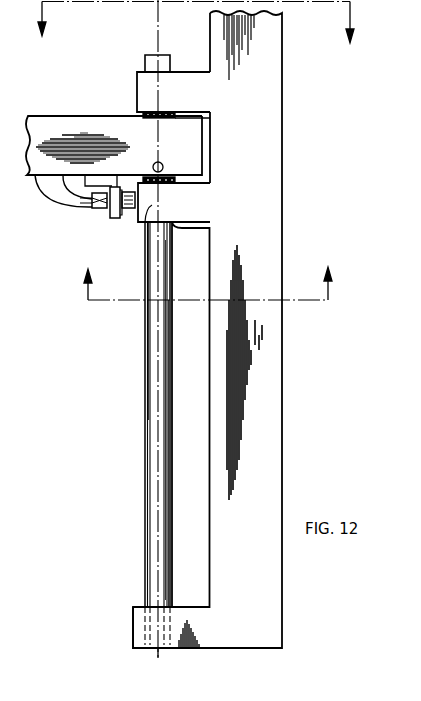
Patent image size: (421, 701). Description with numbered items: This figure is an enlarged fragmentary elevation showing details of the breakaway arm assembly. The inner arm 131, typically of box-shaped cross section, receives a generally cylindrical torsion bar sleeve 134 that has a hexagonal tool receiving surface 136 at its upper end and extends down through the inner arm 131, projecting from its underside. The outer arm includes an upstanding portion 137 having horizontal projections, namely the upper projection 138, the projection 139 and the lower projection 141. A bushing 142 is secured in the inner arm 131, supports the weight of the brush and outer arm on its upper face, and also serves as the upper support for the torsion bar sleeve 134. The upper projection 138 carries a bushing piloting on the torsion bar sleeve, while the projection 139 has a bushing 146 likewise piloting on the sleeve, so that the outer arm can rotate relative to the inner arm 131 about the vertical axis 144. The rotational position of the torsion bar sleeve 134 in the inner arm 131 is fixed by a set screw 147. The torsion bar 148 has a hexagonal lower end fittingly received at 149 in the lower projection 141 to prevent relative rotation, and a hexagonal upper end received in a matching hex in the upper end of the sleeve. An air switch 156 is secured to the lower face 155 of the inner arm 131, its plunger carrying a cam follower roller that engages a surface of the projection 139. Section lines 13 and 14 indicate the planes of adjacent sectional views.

The section line 13- 13 is at (196, 24).
The section line 14- 14 is at (211, 284).
The inner arm 131 is at (62, 127).
The torsion bar sleeve 134 is at (210, 185).
The hexagonal tool receiving surface 136 is at (145, 62).
The upstanding portion 137 is at (270, 325).
The upper projection 138 is at (137, 78).
The projection 139 is at (152, 213).
The lower projection 141 is at (140, 624).
The bushing 142 is at (143, 114).
The vertical axis 144 is at (158, 15).
The bushing 146 is at (175, 224).
The set screw 147 is at (164, 166).
The torsion bar 148 is at (145, 428).
The hexagonal lower end receiving location 149 is at (163, 647).
The lower face 155 is at (63, 190).
The air switch 156 is at (122, 216).